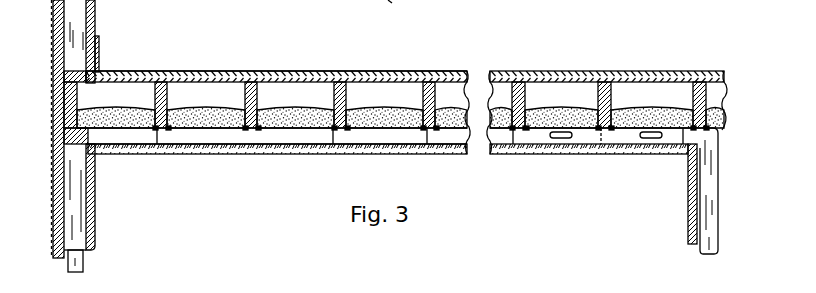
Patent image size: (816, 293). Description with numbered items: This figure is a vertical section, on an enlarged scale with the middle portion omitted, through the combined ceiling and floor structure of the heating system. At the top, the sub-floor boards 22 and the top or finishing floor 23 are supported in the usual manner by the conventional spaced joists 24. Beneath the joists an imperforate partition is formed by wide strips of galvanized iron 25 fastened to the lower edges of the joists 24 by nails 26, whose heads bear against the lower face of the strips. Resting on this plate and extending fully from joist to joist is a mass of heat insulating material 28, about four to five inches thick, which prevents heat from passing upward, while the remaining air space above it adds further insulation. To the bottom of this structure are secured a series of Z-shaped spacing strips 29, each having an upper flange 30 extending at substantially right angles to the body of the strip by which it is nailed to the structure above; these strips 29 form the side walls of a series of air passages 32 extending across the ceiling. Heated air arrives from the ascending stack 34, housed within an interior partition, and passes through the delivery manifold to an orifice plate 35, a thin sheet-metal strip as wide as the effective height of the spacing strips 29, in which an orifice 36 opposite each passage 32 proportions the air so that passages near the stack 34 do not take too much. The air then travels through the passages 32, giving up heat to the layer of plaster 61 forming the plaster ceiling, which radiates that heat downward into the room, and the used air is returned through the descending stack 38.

The sub-floor boards 22 is at (404, 72).
The finishing floor 23 is at (360, 71).
The joists 24 is at (347, 97).
The strips of galvanized iron 25 is at (544, 127).
The nails 26 is at (528, 103).
The heat insulating material 28 is at (200, 112).
The Z-shaped spacing strips 29 is at (408, 153).
The upper flange 30 is at (430, 132).
The air passages 32 is at (272, 136).
The ascending stack 34 is at (710, 183).
The orifice plate 35 is at (627, 145).
The orifice 36 is at (559, 139).
The descending stack 38 is at (127, 246).
The layer of plaster 61 is at (295, 155).